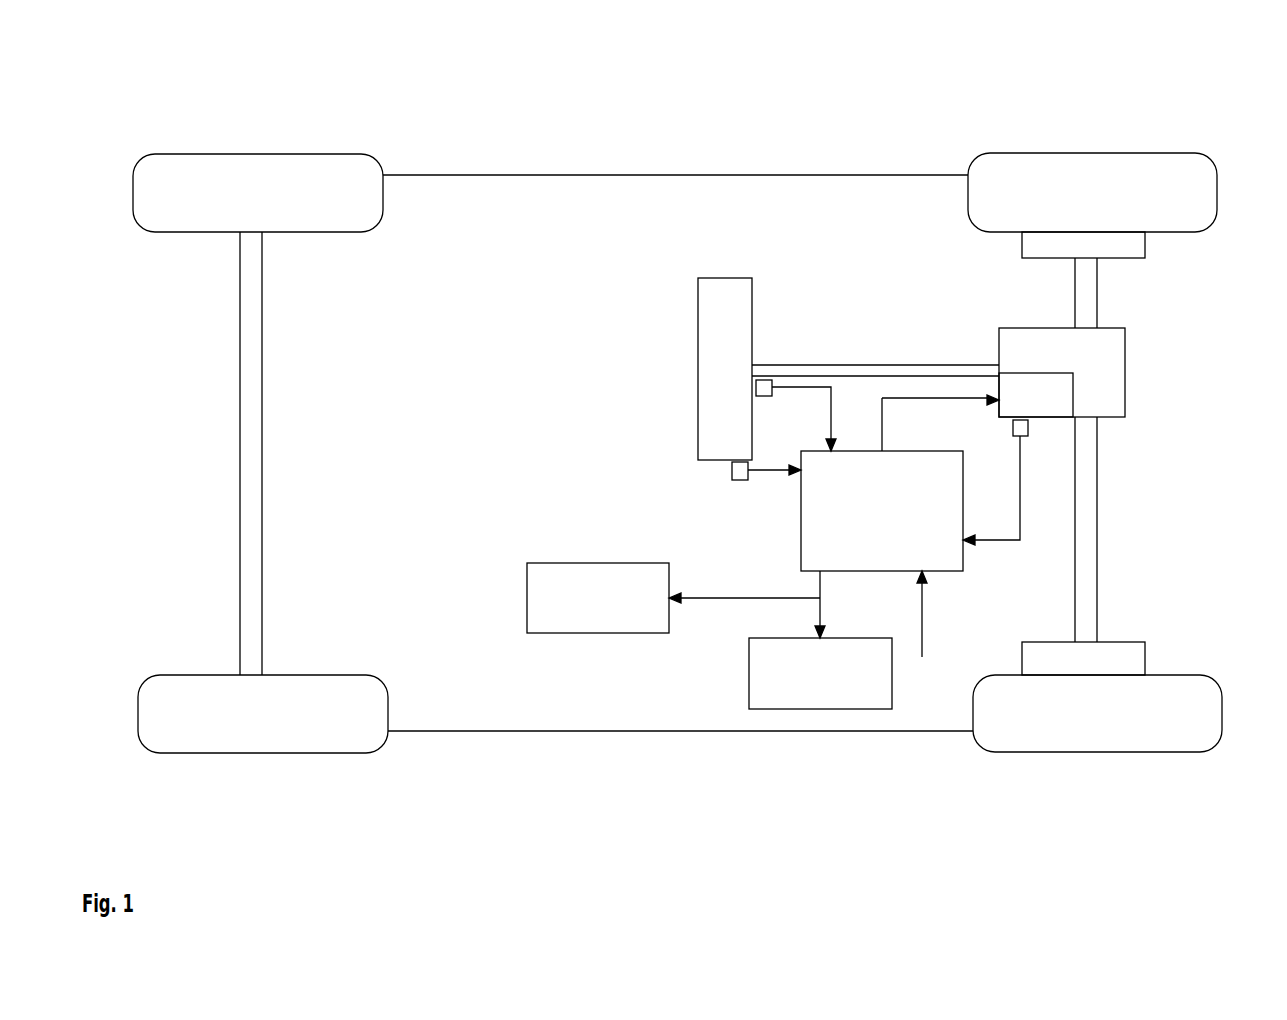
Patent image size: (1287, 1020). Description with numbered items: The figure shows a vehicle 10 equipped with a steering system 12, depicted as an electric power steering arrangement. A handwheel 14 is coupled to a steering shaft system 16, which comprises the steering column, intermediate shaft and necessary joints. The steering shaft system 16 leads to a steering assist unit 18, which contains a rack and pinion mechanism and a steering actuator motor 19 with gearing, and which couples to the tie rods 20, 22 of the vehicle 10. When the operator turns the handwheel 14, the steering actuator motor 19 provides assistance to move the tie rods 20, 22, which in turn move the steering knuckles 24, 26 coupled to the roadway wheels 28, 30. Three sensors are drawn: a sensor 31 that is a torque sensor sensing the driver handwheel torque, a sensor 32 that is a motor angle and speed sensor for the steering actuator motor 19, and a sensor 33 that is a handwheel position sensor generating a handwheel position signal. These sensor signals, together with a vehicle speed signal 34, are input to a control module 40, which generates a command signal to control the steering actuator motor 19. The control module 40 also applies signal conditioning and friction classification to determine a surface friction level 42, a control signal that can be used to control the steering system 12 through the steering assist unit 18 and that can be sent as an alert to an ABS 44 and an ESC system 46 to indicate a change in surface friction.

The vehicle 10 is at (722, 66).
The steering system 12 is at (846, 254).
The handwheel 14 is at (723, 278).
The steering shaft system 16 is at (845, 365).
The steering assist unit 18 is at (1125, 366).
The steering actuator motor 19 is at (1052, 407).
The tie rod 20 is at (1097, 305).
The tie rod 22 is at (1097, 497).
The steering knuckle 24 is at (1022, 258).
The steering knuckle 26 is at (1055, 642).
The roadway wheel 28 is at (1135, 153).
The roadway wheel 30 is at (1160, 675).
The sensor 31 is at (762, 396).
The sensor 32 is at (1030, 428).
The sensor 33 is at (740, 480).
The vehicle speed signal 34 is at (924, 631).
The control module 40 is at (900, 451).
The surface friction level 42 is at (826, 614).
The ABS 44 is at (538, 563).
The ESC system 46 is at (749, 676).